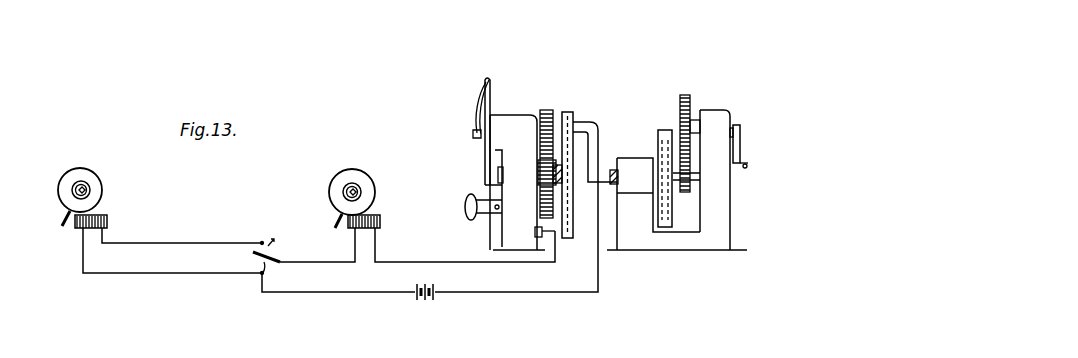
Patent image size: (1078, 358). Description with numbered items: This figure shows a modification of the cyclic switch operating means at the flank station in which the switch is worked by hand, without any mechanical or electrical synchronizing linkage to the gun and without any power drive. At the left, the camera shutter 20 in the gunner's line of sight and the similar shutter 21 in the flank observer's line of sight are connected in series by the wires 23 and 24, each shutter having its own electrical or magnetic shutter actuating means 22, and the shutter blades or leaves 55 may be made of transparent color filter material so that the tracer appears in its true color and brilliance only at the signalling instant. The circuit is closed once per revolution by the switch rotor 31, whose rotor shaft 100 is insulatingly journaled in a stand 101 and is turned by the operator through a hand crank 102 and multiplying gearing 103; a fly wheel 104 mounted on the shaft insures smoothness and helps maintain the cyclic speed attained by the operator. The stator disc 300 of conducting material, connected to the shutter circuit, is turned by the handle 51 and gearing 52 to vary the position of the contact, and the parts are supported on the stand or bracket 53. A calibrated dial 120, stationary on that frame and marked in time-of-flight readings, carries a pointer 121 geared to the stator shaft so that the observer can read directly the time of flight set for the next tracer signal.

The camera shutter 20 is at (103, 188).
The shutter 21 is at (354, 168).
The shutter actuating means 22 is at (103, 215).
The wire 23 is at (200, 242).
The wire 24 is at (208, 278).
The rotor 31 is at (585, 125).
The handle 51 is at (465, 206).
The gearing 52 is at (537, 171).
The stand or bracket 53 is at (512, 116).
The shutter blades or leaves 55 is at (88, 188).
The rotor shaft 100 is at (612, 170).
The stand 101 is at (635, 232).
The hand crank 102 is at (740, 144).
The multiplying gearing 103 is at (689, 108).
The fly wheel 104 is at (668, 130).
The dial 120 is at (492, 84).
The pointer 121 is at (485, 97).
The disc 300 is at (568, 111).